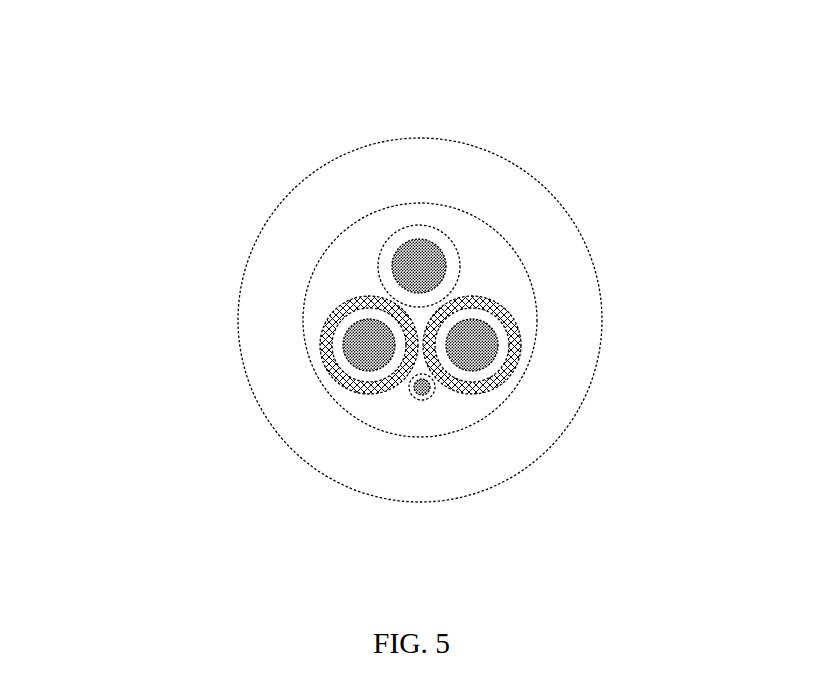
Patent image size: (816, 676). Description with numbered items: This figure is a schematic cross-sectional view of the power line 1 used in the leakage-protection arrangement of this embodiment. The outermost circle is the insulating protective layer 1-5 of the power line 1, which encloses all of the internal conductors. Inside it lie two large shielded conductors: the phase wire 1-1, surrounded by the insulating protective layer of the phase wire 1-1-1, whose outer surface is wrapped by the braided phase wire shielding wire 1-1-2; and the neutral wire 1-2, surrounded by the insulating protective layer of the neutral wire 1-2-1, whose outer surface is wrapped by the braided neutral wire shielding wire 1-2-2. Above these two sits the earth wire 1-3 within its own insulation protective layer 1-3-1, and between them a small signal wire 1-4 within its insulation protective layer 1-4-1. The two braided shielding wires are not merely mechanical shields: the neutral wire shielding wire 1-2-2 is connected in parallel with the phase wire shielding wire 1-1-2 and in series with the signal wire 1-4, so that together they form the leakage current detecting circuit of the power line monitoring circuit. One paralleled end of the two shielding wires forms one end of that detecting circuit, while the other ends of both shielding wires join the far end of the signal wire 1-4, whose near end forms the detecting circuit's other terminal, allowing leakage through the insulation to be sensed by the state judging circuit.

The power line 1 is at (214, 25).
The phase wire 1-1 is at (183, 537).
The insulating protective layer of the phase wire 1-1-1 is at (146, 425).
The phase wire shielding wire 1-1-2 is at (108, 303).
The neutral wire 1-2 is at (688, 498).
The insulating protective layer of the neutral wire 1-2-1 is at (789, 407).
The neutral wire shielding wire 1-2-2 is at (761, 282).
The earth wire 1-3 is at (511, 40).
The insulation protective layer of the earth wire 1-3-1 is at (706, 150).
The signal wire 1-4 is at (605, 541).
The insulation protective layer for the signal wire 1-4-1 is at (351, 582).
The insulating protective layer of power line 1-5 is at (163, 130).